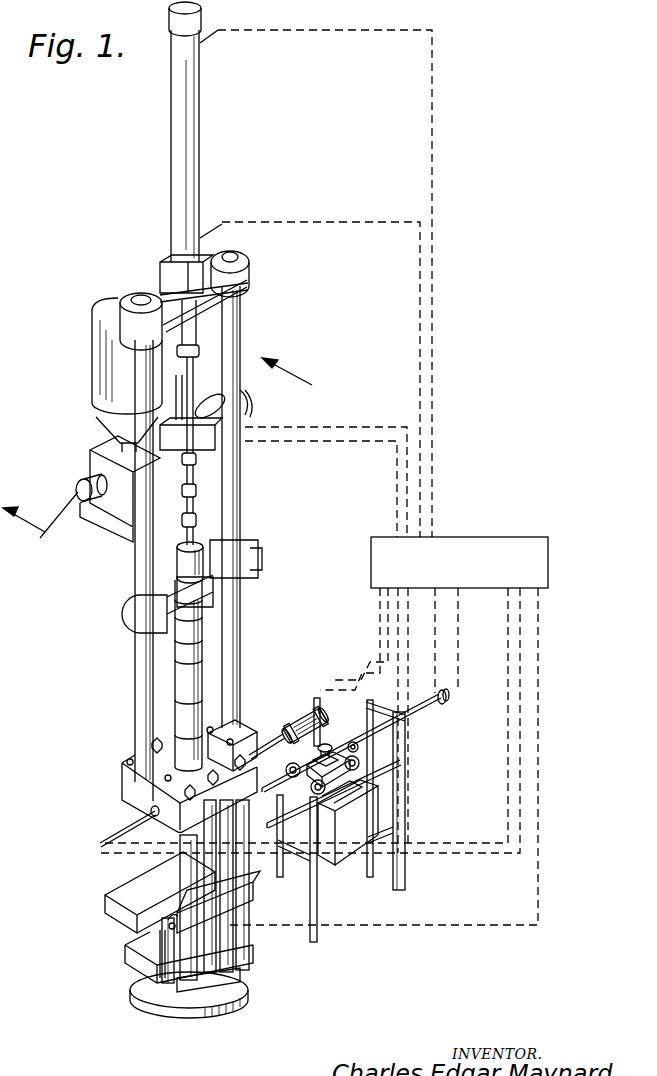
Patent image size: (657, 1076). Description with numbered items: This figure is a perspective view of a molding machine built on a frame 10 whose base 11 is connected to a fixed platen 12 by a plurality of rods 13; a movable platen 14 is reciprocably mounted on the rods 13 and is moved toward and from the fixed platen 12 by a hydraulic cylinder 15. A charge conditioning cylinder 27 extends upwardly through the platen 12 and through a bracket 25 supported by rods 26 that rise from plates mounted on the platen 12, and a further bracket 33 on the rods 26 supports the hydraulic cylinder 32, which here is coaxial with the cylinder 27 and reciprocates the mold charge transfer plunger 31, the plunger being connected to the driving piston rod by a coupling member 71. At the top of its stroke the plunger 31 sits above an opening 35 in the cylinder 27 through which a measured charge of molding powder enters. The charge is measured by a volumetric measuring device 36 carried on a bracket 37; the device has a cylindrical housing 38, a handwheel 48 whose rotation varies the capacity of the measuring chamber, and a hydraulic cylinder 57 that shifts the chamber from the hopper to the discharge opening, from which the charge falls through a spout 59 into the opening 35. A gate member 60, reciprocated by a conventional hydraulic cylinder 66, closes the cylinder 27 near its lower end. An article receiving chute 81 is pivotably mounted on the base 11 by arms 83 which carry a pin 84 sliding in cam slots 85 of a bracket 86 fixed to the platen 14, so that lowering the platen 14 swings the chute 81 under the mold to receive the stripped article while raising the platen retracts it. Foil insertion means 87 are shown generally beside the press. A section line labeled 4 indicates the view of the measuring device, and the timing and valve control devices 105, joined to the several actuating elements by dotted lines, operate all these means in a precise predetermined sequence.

The section line 4- 4 is at (164, 461).
The frame 10 is at (253, 501).
The base 11 is at (253, 950).
The fixed platen 12 is at (257, 770).
The rods 13 is at (125, 816).
The movable platen 14 is at (247, 880).
The hydraulic cylinder 15 is at (240, 977).
The bracket 25 is at (125, 612).
The rods 26 is at (135, 683).
The charge conditioning cylinder 27 is at (205, 623).
The mold charge transfer plunger 31 is at (196, 402).
The hydraulic cylinder 32 is at (203, 170).
The bracket 33 is at (250, 263).
The opening 35 is at (182, 565).
The volumetric measuring device 36 is at (82, 462).
The bracket 37 is at (100, 512).
The cylindrical housing 38 is at (176, 410).
The handwheel 48 is at (77, 488).
The hydraulic cylinder 57 is at (215, 410).
The spout 59 is at (183, 515).
The gate member 60 is at (265, 717).
The hydraulic cylinder 66 is at (302, 710).
The coupling member 71 is at (200, 345).
The article receiving chute 81 is at (108, 895).
The arms 83 is at (162, 945).
The pin 84 is at (195, 922).
The cam slots 85 is at (160, 975).
The bracket 86 is at (157, 980).
The foil insertion means 87 is at (415, 794).
The automatic control devices 105 is at (487, 537).